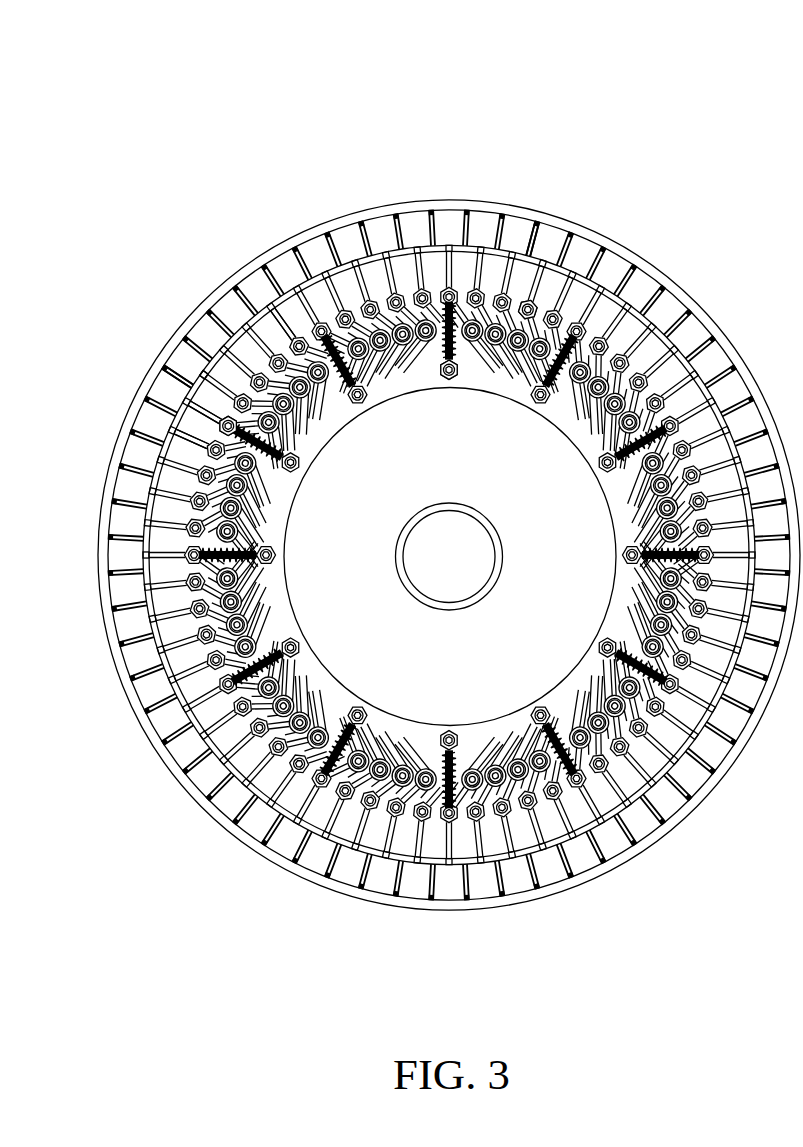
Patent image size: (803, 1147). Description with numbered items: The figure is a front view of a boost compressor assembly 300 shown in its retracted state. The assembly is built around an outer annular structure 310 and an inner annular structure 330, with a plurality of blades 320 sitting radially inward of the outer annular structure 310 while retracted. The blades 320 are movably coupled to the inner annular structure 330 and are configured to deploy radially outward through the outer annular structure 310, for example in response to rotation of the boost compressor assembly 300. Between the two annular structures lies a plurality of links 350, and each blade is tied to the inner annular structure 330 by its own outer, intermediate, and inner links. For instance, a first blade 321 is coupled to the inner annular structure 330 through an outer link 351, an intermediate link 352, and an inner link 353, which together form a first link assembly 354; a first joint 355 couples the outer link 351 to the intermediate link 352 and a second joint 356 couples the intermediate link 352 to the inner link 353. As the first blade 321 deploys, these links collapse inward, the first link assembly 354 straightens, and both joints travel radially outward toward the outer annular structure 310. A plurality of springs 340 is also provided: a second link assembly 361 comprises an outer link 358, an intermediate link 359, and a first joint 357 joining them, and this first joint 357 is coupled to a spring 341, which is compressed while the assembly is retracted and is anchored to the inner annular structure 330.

The boost compressor assembly 300 is at (674, 96).
The outer annular structure 310 is at (277, 250).
The plurality of blades 320 is at (350, 245).
The first blade 321 is at (521, 238).
The inner annular structure 330 is at (449, 479).
The plurality of springs 340 is at (273, 318).
The spring 341 is at (290, 410).
The plurality of links 350 is at (282, 318).
The outer link 351 is at (516, 298).
The intermediate link 352 is at (447, 380).
The inner link 353 is at (465, 378).
The first link assembly 354 is at (527, 318).
The first joint 355 is at (478, 322).
The second joint 356 is at (552, 338).
The first joint 357 is at (216, 433).
The outer link 358 is at (200, 410).
The intermediate link 359 is at (200, 385).
The second link assembly 361 is at (204, 427).